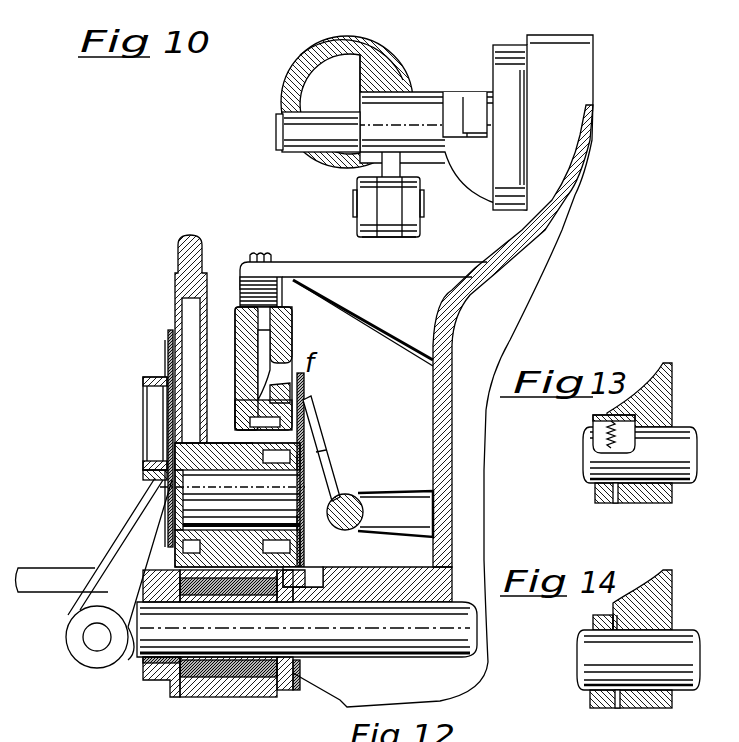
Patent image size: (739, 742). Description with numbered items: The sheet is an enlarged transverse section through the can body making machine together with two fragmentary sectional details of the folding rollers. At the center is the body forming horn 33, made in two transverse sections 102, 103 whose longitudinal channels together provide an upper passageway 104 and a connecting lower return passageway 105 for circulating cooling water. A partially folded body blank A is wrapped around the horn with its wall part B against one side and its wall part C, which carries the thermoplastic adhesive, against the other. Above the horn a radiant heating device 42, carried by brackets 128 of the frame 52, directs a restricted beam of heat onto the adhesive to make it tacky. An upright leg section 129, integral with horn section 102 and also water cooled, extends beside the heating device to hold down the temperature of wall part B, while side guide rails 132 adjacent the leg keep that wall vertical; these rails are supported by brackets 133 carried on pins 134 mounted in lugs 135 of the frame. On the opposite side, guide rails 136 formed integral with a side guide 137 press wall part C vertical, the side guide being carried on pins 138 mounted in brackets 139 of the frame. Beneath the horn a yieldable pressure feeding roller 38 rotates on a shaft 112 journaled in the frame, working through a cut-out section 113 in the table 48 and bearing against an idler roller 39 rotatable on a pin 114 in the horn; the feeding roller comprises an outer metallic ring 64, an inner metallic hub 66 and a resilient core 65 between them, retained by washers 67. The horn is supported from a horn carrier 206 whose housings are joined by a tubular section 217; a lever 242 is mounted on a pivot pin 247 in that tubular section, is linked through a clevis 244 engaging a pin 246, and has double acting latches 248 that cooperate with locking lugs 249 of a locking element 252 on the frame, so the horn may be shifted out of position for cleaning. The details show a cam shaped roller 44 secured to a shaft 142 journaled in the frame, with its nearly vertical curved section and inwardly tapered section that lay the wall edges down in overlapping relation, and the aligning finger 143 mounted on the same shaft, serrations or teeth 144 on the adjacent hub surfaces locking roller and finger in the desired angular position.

In FIG. 10, the frame 52 is at (470, 498).
In FIG. 10, the tubular section 217 is at (310, 58).
In FIG. 10, the horn carrier 206 is at (363, 40).
In FIG. 10, the lever 242 is at (419, 100).
In FIG. 10, the pivot pin 247 is at (283, 130).
In FIG. 10, the locking lugs 249 is at (453, 107).
In FIG. 10, the double acting latches 248 is at (470, 107).
In FIG. 10, the locking element 252 is at (503, 58).
In FIG. 10, the pin 246 is at (424, 207).
In FIG. 10, the clevis 244 is at (405, 236).
In FIG. 10, the brackets 128 is at (363, 309).
In FIG. 10, the heating device 42 is at (237, 330).
In FIG. 10, the upright leg section 129 is at (185, 282).
In FIG. 10, the wall part B is at (168, 343).
In FIG. 10, the body blank A is at (165, 362).
In FIG. 10, the side guide rails 132 is at (145, 466).
In FIG. 10, the idler rollers 39 is at (185, 488).
In FIG. 10, the horn section 102 is at (178, 525).
In FIG. 10, the lower return passageway 105 is at (178, 548).
In FIG. 10, the body forming horn 33 is at (210, 446).
In FIG. 10, the wall part C is at (305, 386).
In FIG. 10, the upper passageway 104 is at (303, 462).
In FIG. 10, the pins 114 is at (317, 518).
In FIG. 10, the guide rails 136 is at (311, 407).
In FIG. 10, the side guide 137 is at (320, 457).
In FIG. 10, the pins 138 is at (348, 496).
In FIG. 10, the brackets 139 is at (395, 514).
In FIG. 10, the horn section 103 is at (301, 553).
In FIG. 10, the cut-out sections 113 is at (308, 572).
In FIG. 10, the shafts 112 is at (307, 629).
In FIG. 10, the inner metallic ring or hub 66 is at (200, 650).
In FIG. 10, the outer metallic ring 64 is at (220, 697).
In FIG. 10, the pressure feeding rollers 38 is at (170, 680).
In FIG. 10, the resilient ring or core 65 is at (250, 690).
In FIG. 10, the washers 67 is at (158, 665).
In FIG. 10, the brackets 133 is at (147, 497).
In FIG. 10, the pins 134 is at (90, 636).
In FIG. 10, the lugs 135 is at (128, 662).
In FIG. 10, the table 48 is at (42, 571).
In FIG. 13, the cam shaped roller 44 is at (667, 382).
In FIG. 14, the cam shaped roller 44 is at (655, 592).
In FIG. 13, the shaft 142 is at (640, 455).
In FIG. 14, the shaft 142 is at (638, 660).
In FIG. 13, the aligning finger 143 is at (606, 418).
In FIG. 14, the aligning finger 143 is at (600, 622).
In FIG. 13, the serrations or teeth 144 is at (599, 441).
In FIG. 14, the serrations or teeth 144 is at (615, 709).